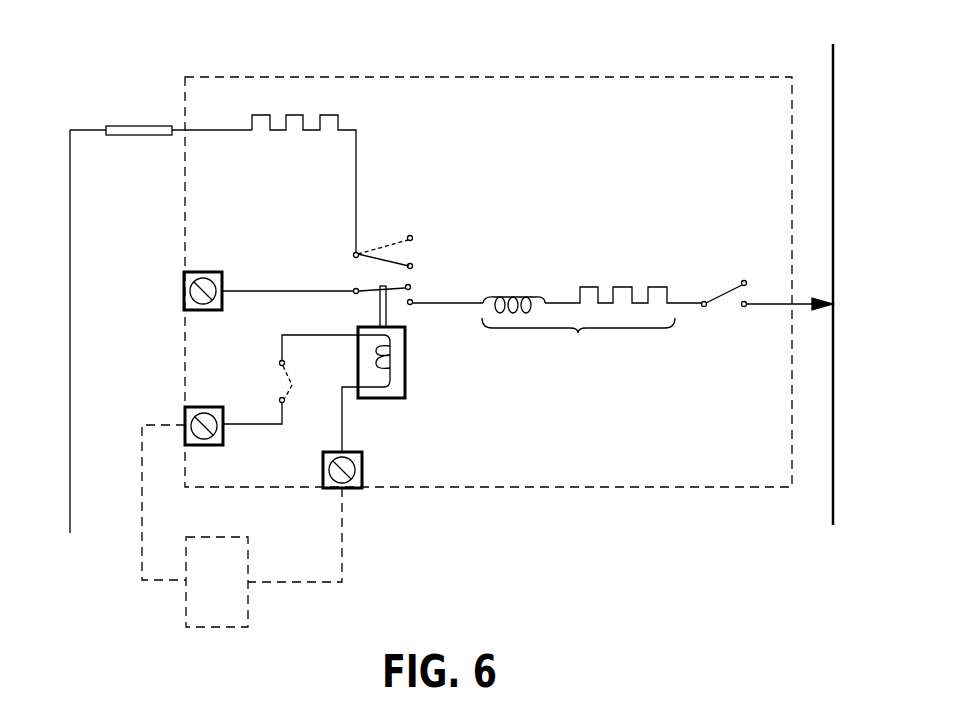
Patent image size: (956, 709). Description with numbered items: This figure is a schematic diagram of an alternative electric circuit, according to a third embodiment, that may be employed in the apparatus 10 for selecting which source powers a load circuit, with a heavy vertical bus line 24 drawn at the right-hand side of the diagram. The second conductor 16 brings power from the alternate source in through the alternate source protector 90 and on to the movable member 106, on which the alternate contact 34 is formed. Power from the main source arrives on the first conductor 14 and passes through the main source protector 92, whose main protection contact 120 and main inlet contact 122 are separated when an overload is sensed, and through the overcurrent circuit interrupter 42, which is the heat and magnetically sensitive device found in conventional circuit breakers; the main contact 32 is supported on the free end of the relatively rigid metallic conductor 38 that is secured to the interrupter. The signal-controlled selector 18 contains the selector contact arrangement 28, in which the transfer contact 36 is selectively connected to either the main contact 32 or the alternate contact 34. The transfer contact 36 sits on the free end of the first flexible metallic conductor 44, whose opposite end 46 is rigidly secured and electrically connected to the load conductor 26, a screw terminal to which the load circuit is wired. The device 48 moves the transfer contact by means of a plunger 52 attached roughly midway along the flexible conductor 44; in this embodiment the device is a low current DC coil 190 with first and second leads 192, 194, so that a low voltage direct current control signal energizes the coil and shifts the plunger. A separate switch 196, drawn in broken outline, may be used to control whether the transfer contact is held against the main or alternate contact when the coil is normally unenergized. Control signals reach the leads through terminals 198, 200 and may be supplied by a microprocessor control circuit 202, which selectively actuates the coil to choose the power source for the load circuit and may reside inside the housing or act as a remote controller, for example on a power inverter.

The apparatus 10 is at (574, 60).
The first conductor 14 is at (797, 303).
The second conductor 16 is at (88, 128).
The signal-controlled selector 18 is at (424, 336).
The load bus 24 is at (833, 147).
The load conductor 26 is at (184, 273).
The selector contact arrangement 28 is at (459, 247).
The main contact 32 is at (413, 301).
The alternate contact 34 is at (412, 265).
The transfer contact 36 is at (410, 286).
The metallic conductor 38 is at (440, 305).
The overcurrent circuit interrupter 42 is at (578, 333).
The first flexible metallic conductor 44 is at (380, 290).
The opposite end 46 is at (355, 294).
The device 48 is at (419, 402).
The plunger 52 is at (380, 311).
The alternate source protector 90 is at (307, 98).
The main source protector 92 is at (622, 270).
The movable member 106 is at (384, 262).
The main protection contact 120 is at (757, 262).
The main inlet contact 122 is at (743, 307).
The DC coil 190 is at (383, 399).
The first lead 192 is at (250, 423).
The second lead 194 is at (338, 430).
The switch 196 is at (288, 378).
The terminal 198 is at (185, 408).
The terminal 200 is at (362, 492).
The microprocessor control circuit 202 is at (188, 601).